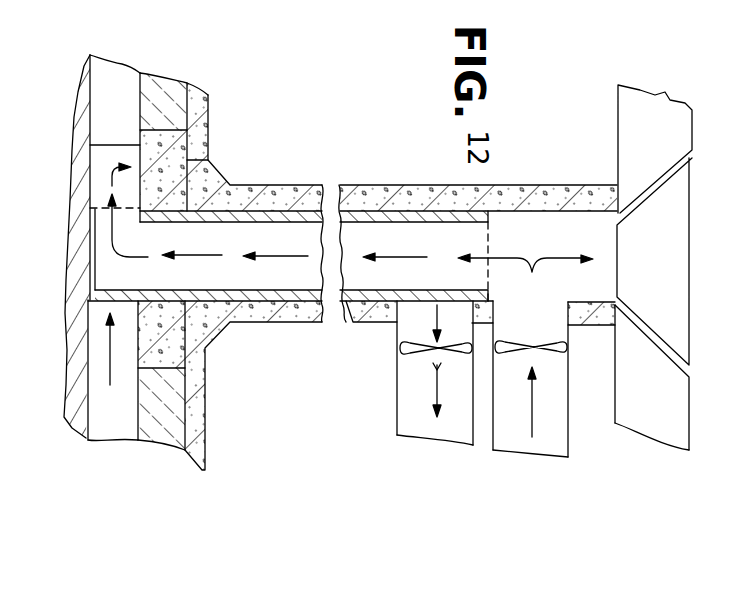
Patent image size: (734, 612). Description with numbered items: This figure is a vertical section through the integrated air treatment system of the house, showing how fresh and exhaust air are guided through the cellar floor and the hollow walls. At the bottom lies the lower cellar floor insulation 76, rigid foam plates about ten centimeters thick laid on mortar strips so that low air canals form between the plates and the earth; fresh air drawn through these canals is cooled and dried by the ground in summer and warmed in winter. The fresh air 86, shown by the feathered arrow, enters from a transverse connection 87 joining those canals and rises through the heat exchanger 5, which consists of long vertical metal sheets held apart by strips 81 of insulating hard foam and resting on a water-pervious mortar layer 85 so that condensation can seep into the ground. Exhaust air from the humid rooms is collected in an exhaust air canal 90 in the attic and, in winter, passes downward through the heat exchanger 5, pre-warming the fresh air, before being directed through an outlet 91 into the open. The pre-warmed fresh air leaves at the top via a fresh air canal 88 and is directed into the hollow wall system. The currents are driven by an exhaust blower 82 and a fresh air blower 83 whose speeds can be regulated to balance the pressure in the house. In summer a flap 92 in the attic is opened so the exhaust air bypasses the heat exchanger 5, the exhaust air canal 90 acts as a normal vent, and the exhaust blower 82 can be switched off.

The heat exchanger 5 is at (400, 177).
The lower cellar floor insulation 76 is at (178, 421).
The strips of insulating material 81 is at (362, 217).
The exhaust blower 82 is at (500, 354).
The fresh air blower 83 is at (408, 350).
The mortar layer 85 is at (97, 234).
The fresh air 86 is at (112, 373).
The transverse connection 87 is at (91, 398).
The fresh air canal 88 is at (408, 325).
The exhaust air canal 90 is at (532, 272).
The outlet 91 is at (133, 146).
The flap 92 is at (634, 238).